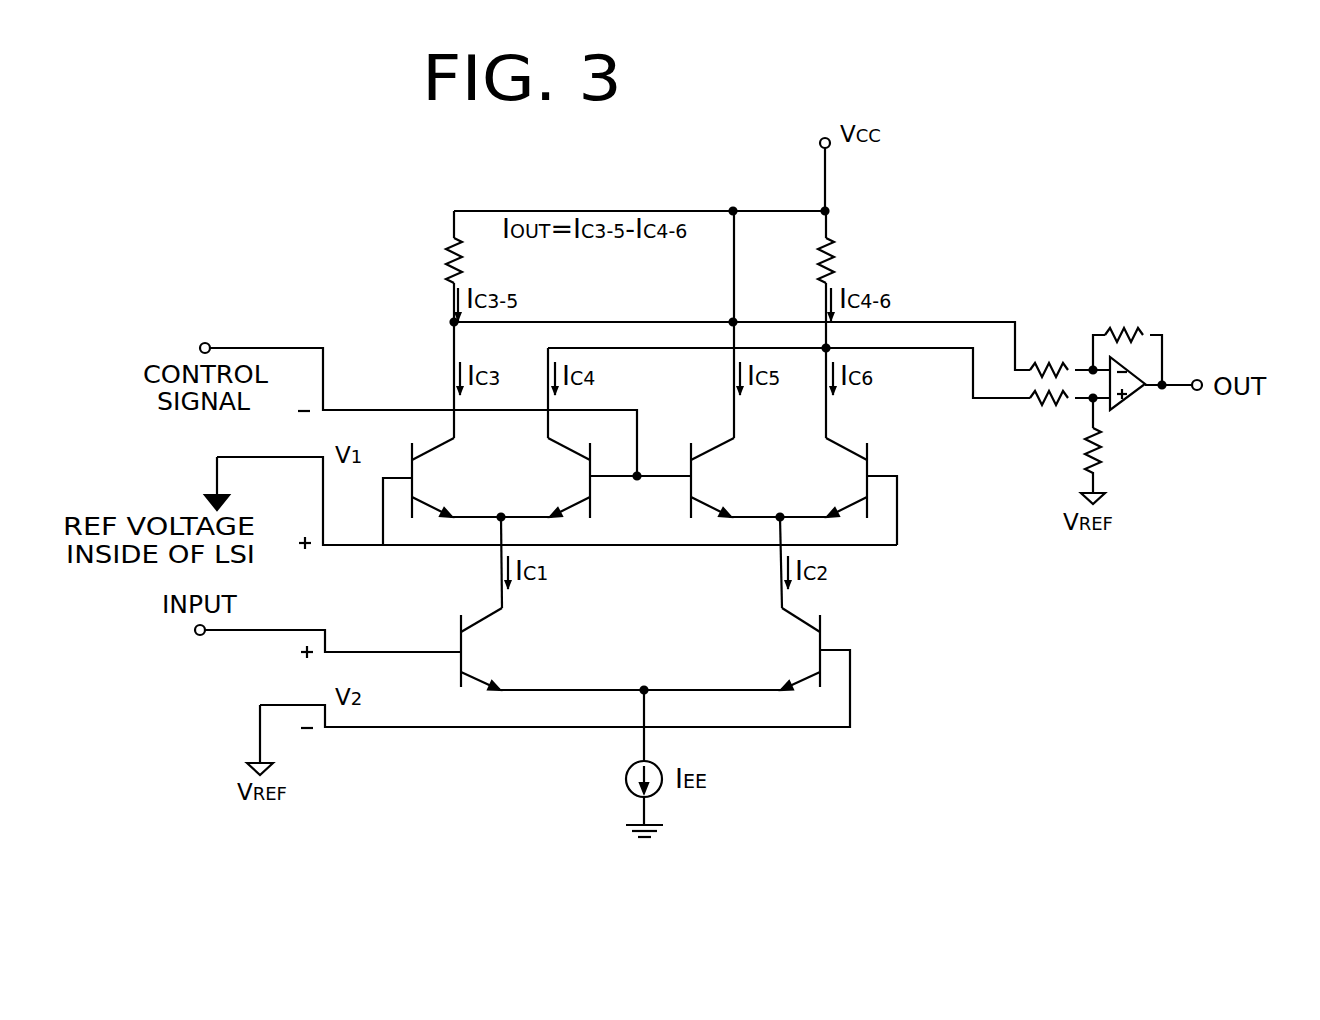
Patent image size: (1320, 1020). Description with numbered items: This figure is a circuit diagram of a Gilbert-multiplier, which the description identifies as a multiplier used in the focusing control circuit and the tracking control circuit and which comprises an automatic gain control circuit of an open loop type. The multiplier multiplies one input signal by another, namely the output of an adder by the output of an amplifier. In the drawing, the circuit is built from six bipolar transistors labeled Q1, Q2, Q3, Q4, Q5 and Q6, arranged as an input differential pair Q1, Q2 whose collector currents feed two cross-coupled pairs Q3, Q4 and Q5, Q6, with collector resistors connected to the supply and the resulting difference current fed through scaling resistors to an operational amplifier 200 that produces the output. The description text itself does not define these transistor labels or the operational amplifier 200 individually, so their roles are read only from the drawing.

The input transistor Q1 is at (489, 649).
The input transistor Q2 is at (792, 649).
The control transistor Q3 is at (441, 478).
The control transistor Q4 is at (561, 478).
The control transistor Q5 is at (720, 478).
The control transistor Q6 is at (838, 478).
The operational amplifier OP200 200 is at (1156, 397).